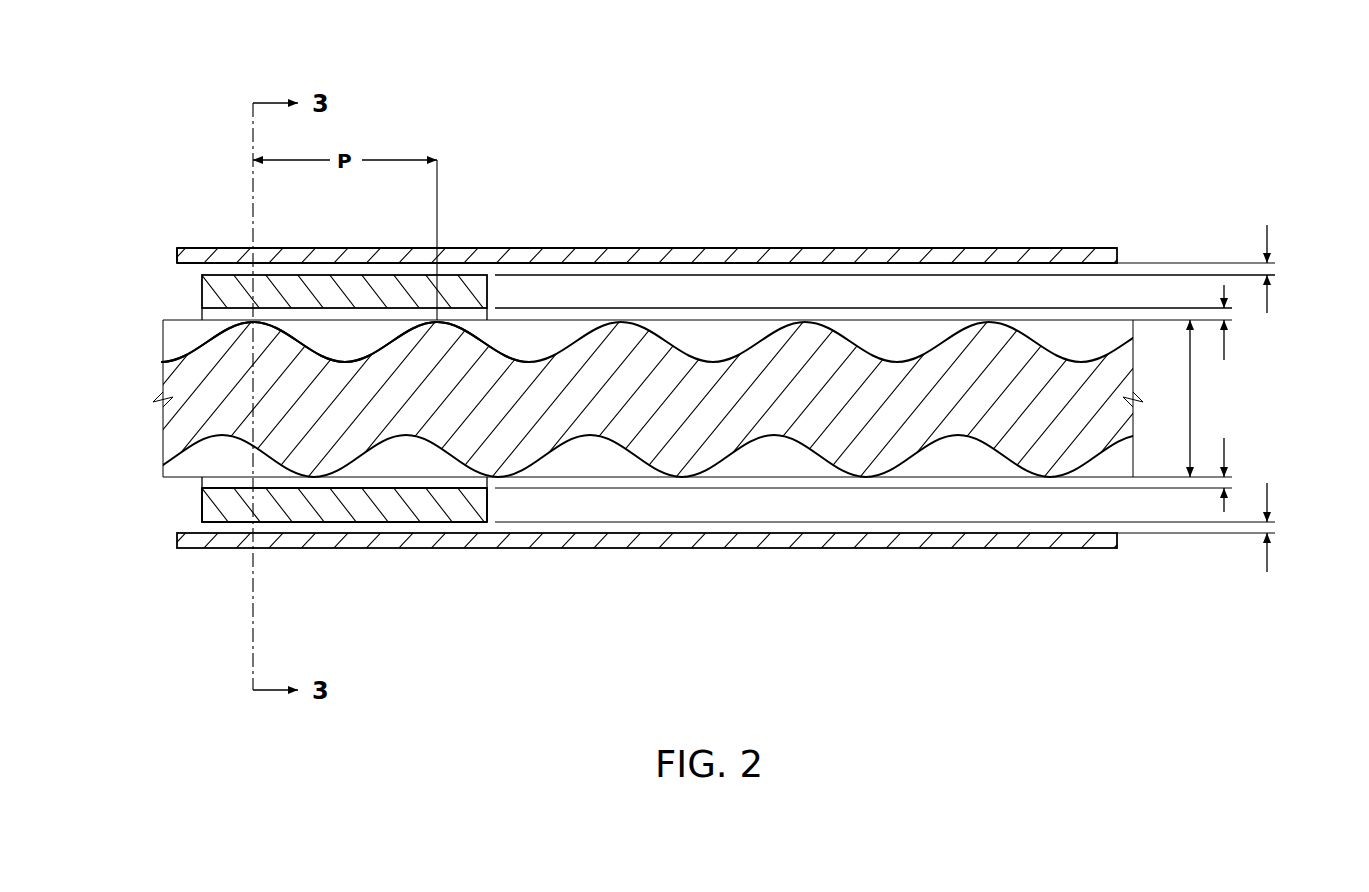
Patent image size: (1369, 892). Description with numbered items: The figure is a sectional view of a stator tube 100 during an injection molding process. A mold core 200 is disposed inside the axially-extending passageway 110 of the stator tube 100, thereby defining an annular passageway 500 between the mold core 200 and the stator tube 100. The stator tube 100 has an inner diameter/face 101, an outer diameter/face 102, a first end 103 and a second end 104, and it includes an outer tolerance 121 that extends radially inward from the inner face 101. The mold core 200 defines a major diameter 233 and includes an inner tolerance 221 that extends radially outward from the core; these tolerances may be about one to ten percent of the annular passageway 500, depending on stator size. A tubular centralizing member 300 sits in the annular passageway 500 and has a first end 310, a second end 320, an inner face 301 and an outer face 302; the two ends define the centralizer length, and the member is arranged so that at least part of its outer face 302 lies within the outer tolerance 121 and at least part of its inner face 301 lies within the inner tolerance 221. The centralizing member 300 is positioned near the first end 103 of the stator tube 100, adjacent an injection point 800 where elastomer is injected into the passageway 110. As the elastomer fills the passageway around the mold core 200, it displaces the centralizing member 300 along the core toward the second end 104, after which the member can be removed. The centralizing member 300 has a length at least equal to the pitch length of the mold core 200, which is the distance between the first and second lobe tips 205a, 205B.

The stator tube 100 is at (850, 549).
The inner diameter/face 101 is at (193, 268).
The outer diameter/face 102 is at (183, 246).
The first end 103 is at (177, 256).
The second end 104 is at (1118, 250).
The axially-extending passageway 110 is at (833, 285).
The outer tolerance 121 is at (1270, 240).
The mold core 200 is at (880, 430).
The first lobe tip 205a is at (255, 322).
The second lobe tip 205B is at (437, 322).
The inner tolerance 221 is at (1225, 338).
The major diameter 233 is at (1191, 397).
The centralizing member 300 is at (358, 513).
The inner face 301 is at (207, 487).
The outer face 302 is at (207, 523).
The first end 310 is at (200, 510).
The second end 320 is at (489, 503).
The annular passageway 500 is at (740, 292).
The injection point 800 is at (160, 337).